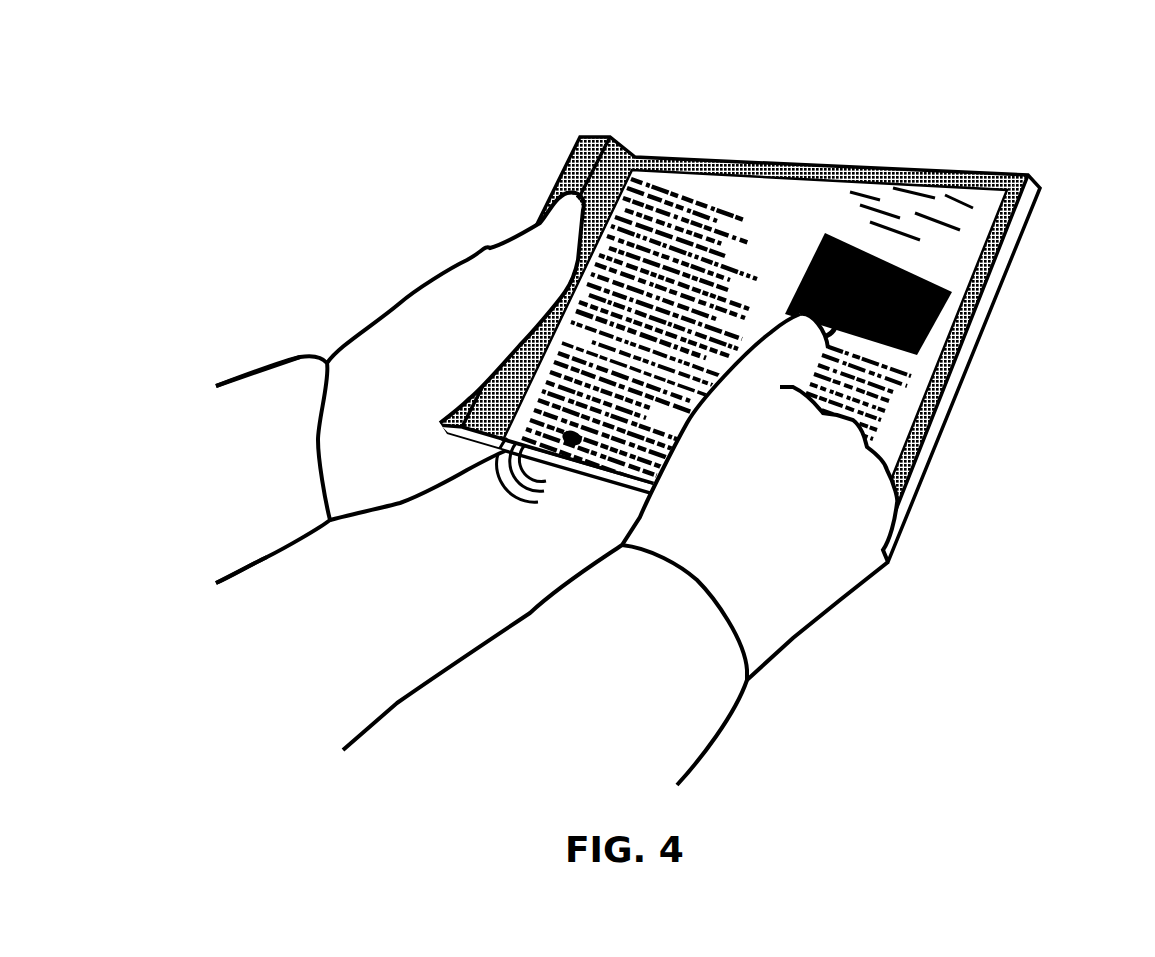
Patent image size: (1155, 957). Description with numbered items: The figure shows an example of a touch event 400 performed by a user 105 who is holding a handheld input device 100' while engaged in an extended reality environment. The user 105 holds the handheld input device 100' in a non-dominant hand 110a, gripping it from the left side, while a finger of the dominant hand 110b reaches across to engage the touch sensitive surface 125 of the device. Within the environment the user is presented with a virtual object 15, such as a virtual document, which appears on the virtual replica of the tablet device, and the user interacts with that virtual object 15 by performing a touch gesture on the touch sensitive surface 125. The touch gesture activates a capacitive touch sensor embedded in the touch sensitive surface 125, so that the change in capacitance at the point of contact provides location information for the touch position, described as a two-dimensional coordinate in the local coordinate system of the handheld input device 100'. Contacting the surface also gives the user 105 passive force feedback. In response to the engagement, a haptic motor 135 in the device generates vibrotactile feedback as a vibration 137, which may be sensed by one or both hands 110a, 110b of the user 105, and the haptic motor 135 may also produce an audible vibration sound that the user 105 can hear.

The touch event 400 is at (778, 328).
The handheld input device 100' is at (762, 335).
The touch sensitive surface 125 is at (940, 247).
The virtual object 15 is at (783, 215).
The haptic motor 135 is at (568, 447).
The vibration 137 is at (507, 478).
The user 105 is at (220, 502).
The non-dominant hand 110a is at (440, 320).
The dominant hand 110b is at (770, 582).